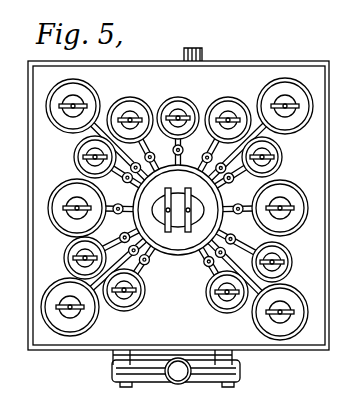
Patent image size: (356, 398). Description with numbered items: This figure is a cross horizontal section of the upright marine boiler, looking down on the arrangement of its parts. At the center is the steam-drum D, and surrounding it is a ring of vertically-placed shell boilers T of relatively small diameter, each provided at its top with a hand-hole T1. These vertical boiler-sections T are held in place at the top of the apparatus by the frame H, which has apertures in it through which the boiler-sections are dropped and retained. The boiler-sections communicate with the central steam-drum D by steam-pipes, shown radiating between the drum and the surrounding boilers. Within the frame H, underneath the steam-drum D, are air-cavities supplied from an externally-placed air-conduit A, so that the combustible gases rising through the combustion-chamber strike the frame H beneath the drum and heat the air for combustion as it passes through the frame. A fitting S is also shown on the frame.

The frame H is at (86, 103).
The shell boilers T is at (80, 157).
The hand-holes T1 is at (157, 274).
The steam-drum D is at (178, 210).
The bracket S is at (205, 53).
The air-conduit A is at (232, 371).